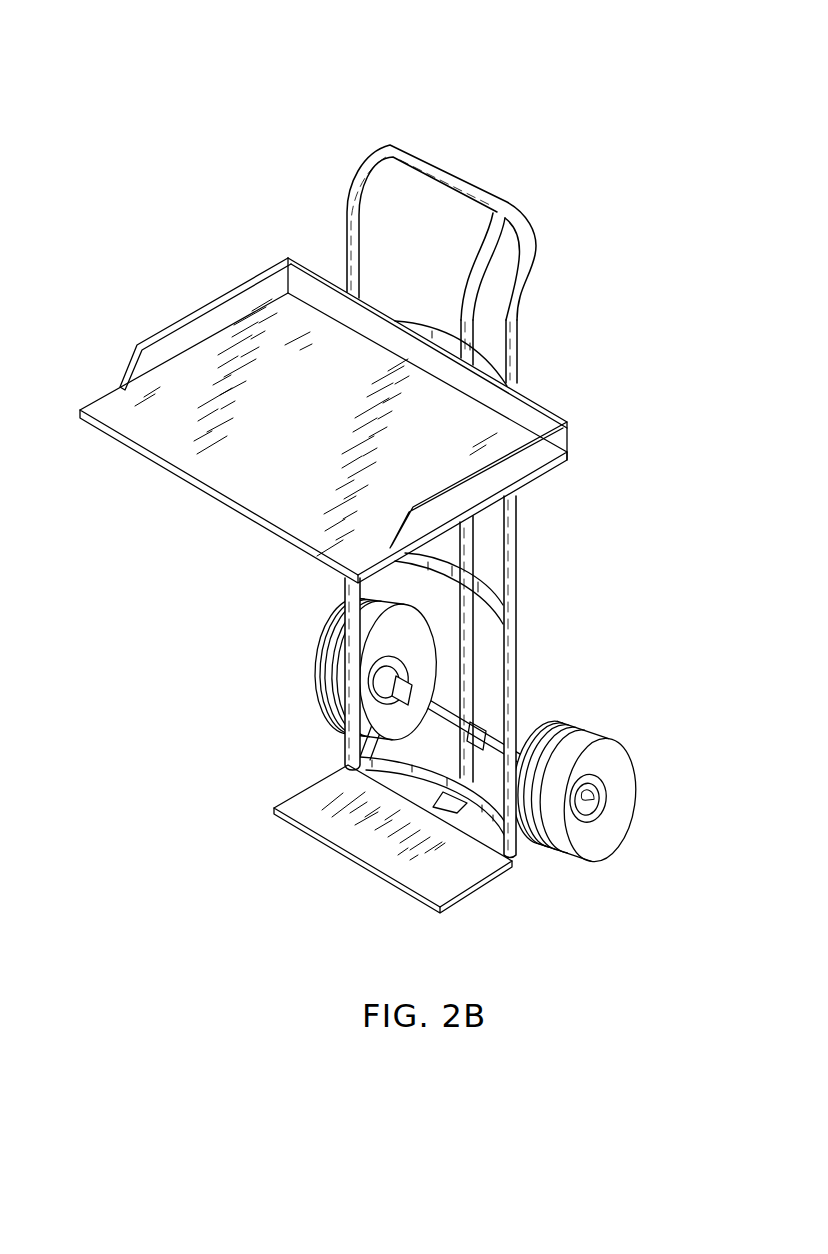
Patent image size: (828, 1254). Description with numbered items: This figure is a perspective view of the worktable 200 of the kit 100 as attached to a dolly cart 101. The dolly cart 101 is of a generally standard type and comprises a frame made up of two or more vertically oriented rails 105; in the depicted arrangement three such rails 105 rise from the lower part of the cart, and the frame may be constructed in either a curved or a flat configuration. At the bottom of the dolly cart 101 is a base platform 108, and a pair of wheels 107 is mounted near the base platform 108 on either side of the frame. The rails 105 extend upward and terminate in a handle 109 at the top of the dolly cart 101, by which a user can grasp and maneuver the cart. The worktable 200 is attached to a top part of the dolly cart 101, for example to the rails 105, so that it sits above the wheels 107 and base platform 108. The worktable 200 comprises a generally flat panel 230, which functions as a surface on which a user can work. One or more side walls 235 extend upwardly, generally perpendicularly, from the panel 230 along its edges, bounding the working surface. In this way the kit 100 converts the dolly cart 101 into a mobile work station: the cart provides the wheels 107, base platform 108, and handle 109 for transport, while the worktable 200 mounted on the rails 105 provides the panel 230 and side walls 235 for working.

The kit 100 is at (562, 1022).
The dolly cart 101 is at (515, 608).
The rails 105 is at (467, 657).
The wheels 107 is at (316, 677).
The base platform 108 is at (345, 810).
The handle 109 is at (503, 194).
The worktable 200 is at (141, 152).
The panel 230 is at (330, 405).
The side walls 235 is at (190, 314).